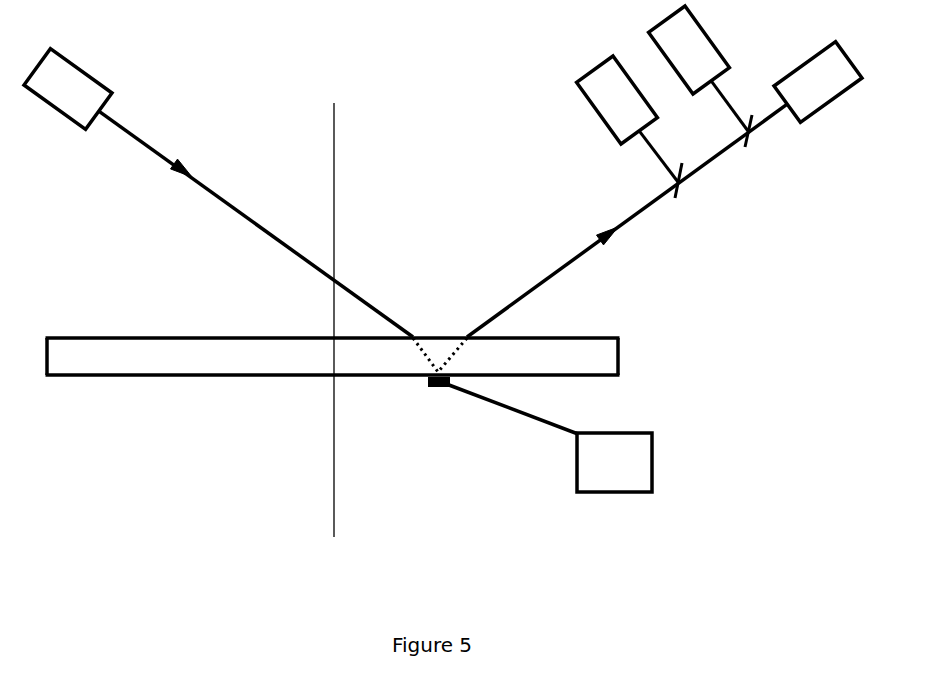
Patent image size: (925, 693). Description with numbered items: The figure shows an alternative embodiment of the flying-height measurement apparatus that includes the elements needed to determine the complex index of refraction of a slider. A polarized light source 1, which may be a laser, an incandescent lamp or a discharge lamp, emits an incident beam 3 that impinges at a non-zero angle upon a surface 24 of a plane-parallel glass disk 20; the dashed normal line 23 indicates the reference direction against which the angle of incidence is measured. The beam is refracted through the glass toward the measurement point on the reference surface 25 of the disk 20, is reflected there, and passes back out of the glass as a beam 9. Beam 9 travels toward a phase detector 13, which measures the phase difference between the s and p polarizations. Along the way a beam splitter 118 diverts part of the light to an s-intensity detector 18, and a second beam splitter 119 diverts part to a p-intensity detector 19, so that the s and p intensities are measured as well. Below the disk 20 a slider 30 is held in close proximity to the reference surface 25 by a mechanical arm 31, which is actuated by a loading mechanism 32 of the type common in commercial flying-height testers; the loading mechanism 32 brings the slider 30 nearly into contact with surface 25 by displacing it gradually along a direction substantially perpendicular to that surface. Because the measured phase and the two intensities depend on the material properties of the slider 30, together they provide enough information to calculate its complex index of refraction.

The polarized light source 1 is at (68, 89).
The incident beam 3 is at (256, 224).
The beam 9 is at (627, 220).
The phase detector 13 is at (818, 82).
The s-intensity detector 18 is at (627, 119).
The p-intensity detector 19 is at (698, 68).
The plane-parallel glass disk 20 is at (620, 357).
The surface normal line 23 is at (334, 185).
The surface 24 is at (203, 337).
The reference surface 25 is at (200, 379).
The slider 30 is at (423, 382).
The mechanical arm 31 is at (523, 417).
The loading mechanism 32 is at (614, 462).
The beam splitter 118 is at (675, 198).
The beam splitter 119 is at (745, 147).